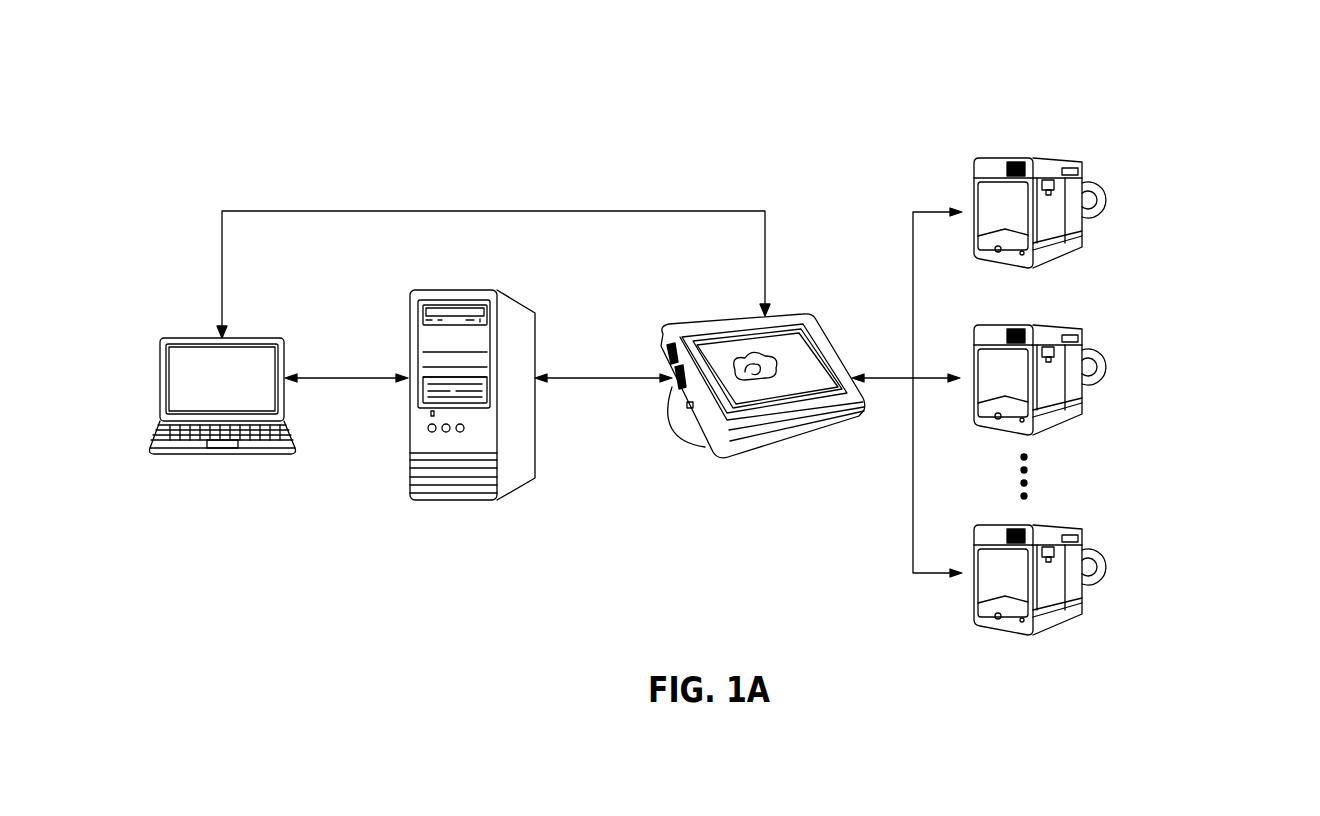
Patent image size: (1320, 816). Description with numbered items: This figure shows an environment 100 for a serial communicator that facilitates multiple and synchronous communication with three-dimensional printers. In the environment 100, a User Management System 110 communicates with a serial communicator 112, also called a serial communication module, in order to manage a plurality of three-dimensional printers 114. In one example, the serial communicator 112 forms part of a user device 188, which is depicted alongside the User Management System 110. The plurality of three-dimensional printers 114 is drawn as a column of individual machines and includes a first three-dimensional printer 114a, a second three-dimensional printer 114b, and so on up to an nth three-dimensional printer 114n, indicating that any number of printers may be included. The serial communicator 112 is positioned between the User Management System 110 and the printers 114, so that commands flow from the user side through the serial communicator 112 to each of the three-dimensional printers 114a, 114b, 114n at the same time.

The environment 100 is at (281, 126).
The user device 188 is at (222, 453).
The User Management System (UMS) 110 is at (452, 500).
The serial communicator 112 is at (773, 446).
The plurality of three-dimensional (3D) printers 114 is at (1187, 137).
The first 3D printer 114a is at (1085, 219).
The second 3D printer 114b is at (1082, 393).
The nth 3D printer 114n is at (1087, 565).